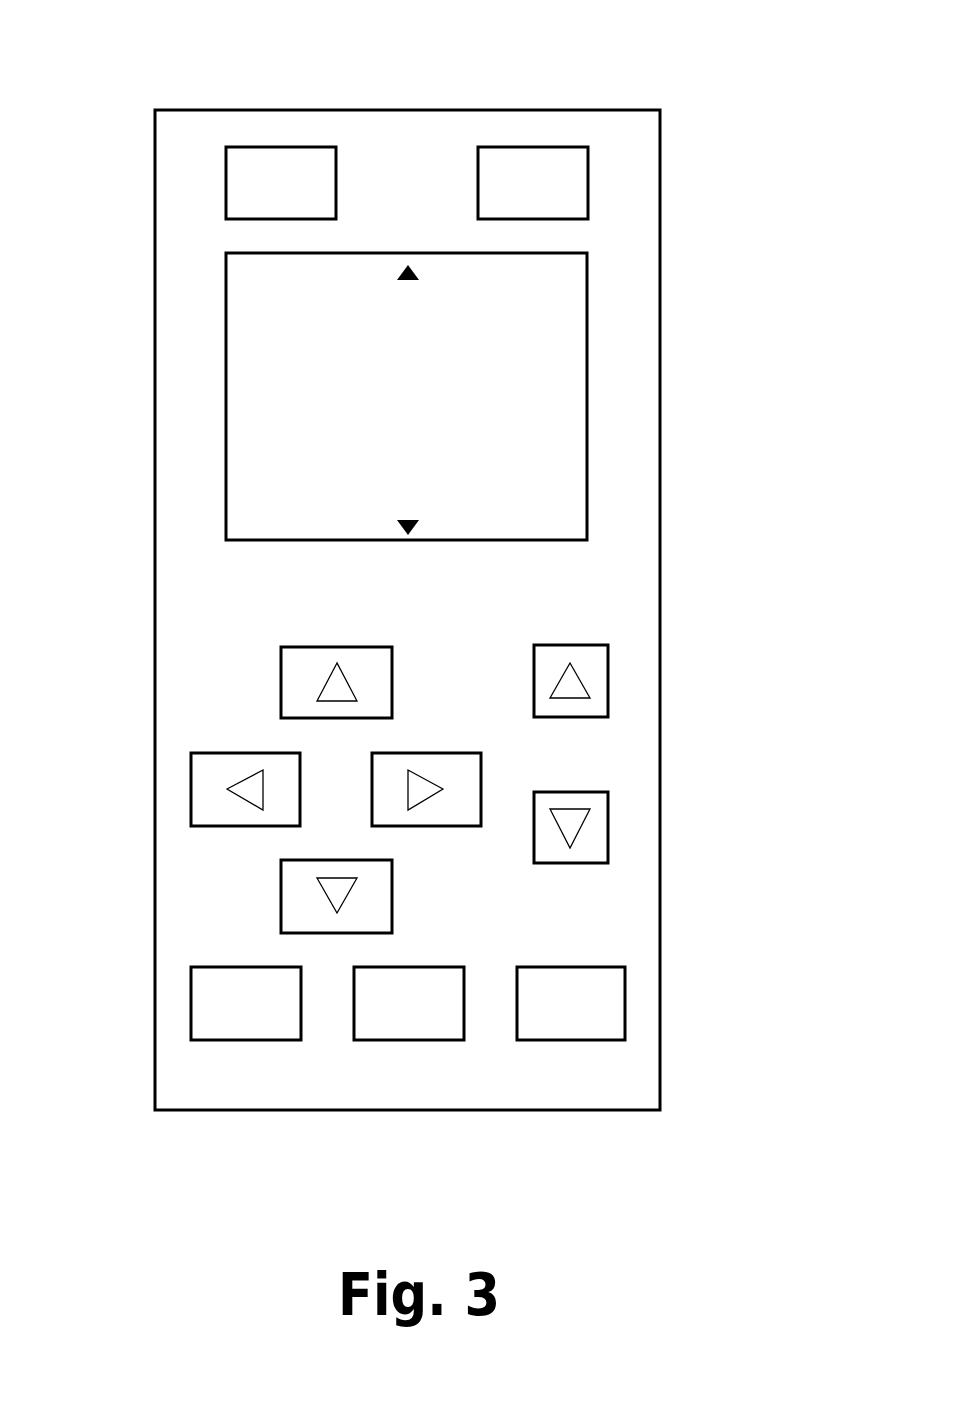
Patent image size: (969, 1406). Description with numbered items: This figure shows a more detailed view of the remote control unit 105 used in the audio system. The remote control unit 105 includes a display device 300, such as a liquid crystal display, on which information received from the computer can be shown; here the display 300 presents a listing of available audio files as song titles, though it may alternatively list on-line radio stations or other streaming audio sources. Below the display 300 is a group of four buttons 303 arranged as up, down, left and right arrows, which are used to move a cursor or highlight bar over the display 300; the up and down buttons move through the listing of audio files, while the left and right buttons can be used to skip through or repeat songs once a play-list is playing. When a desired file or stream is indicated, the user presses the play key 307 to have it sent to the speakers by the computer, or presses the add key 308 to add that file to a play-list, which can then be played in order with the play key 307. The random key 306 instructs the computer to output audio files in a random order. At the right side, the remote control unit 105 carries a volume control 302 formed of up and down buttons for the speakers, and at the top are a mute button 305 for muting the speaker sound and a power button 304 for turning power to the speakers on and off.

The remote control unit 105 is at (625, 485).
The display device 300 is at (280, 397).
The volume control 302 is at (608, 824).
The group of four buttons 303 is at (388, 788).
The power button 304 is at (559, 164).
The mute button 305 is at (298, 165).
The random key 306 is at (263, 1022).
The play key 307 is at (408, 1022).
The add key 308 is at (607, 1020).